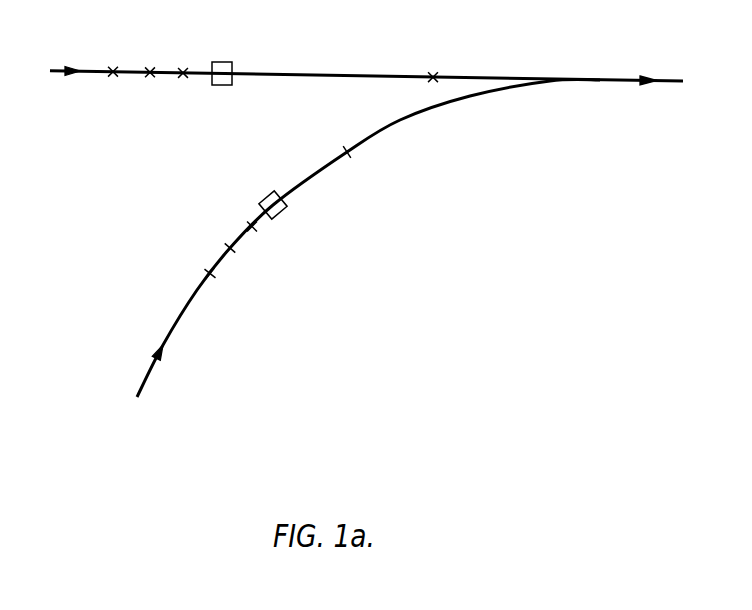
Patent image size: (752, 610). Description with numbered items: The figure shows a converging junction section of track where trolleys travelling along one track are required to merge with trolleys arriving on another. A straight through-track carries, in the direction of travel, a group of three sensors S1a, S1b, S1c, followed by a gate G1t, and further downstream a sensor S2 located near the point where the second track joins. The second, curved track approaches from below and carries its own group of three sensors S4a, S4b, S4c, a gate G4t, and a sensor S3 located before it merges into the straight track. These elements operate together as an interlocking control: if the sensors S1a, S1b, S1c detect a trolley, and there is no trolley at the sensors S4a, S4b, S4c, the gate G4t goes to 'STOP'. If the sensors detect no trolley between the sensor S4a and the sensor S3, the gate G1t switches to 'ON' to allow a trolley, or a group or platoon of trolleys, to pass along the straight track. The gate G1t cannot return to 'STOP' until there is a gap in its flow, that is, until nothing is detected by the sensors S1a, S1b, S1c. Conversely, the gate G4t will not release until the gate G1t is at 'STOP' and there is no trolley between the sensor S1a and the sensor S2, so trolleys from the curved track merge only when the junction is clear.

The sensor S1a is at (182, 86).
The sensor S1b is at (149, 86).
The sensor S1c is at (109, 86).
The gate G1t is at (223, 61).
The sensor S2 is at (437, 65).
The sensor S3 is at (360, 161).
The gate G4t is at (294, 209).
The sensor S4a is at (274, 235).
The sensor S4b is at (250, 256).
The sensor S4c is at (230, 282).